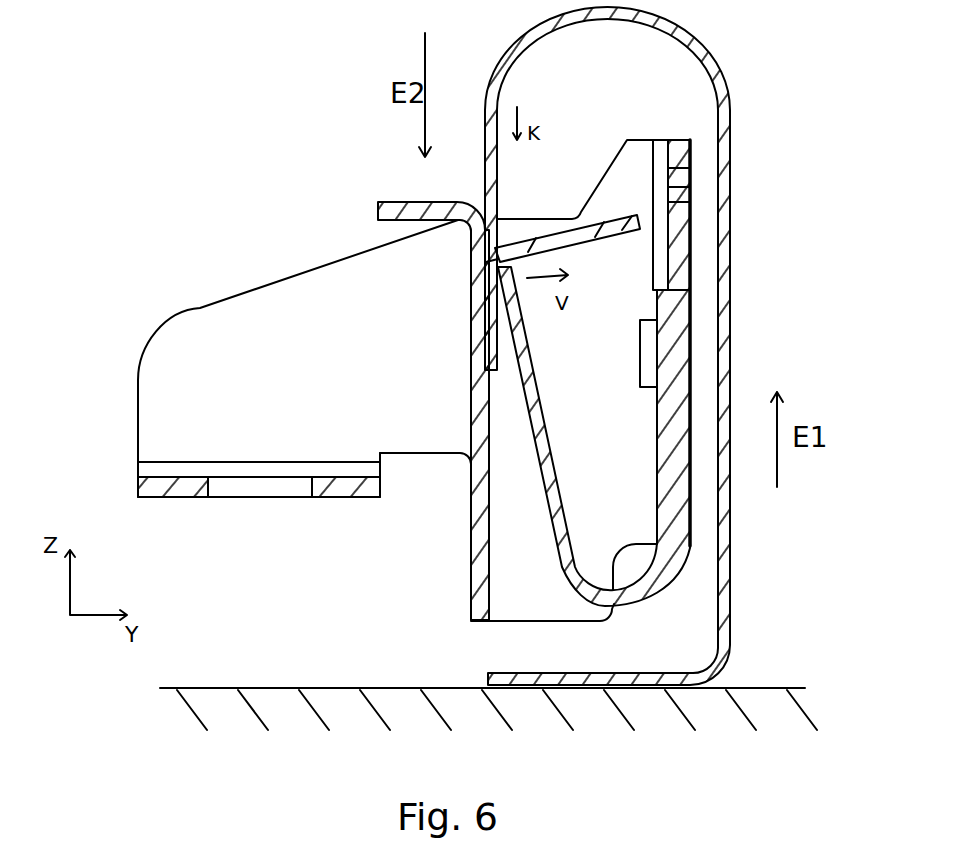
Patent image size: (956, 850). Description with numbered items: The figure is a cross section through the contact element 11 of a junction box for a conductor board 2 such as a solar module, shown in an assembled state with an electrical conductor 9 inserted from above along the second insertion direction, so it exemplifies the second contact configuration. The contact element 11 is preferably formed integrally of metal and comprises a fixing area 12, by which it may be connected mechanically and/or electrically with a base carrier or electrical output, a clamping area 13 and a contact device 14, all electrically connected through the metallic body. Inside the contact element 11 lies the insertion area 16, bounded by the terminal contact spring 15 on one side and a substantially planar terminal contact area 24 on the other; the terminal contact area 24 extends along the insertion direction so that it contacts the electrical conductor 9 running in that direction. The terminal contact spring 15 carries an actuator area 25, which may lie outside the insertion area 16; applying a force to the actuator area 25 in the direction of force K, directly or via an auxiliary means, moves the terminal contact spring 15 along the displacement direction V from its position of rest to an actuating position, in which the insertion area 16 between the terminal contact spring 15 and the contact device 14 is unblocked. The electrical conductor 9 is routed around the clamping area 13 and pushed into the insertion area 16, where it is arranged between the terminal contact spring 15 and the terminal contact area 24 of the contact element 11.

The conductor board 2 is at (313, 688).
The electrical conductor 9 is at (485, 124).
The contact element 11 is at (252, 189).
The fixing area 12 is at (339, 493).
The clamping area 13 is at (678, 140).
The contact device 14 is at (408, 200).
The terminal contact spring 15 is at (530, 364).
The insertion area 16 is at (605, 476).
The terminal contact area 24 is at (492, 262).
The actuator area 25 is at (500, 262).